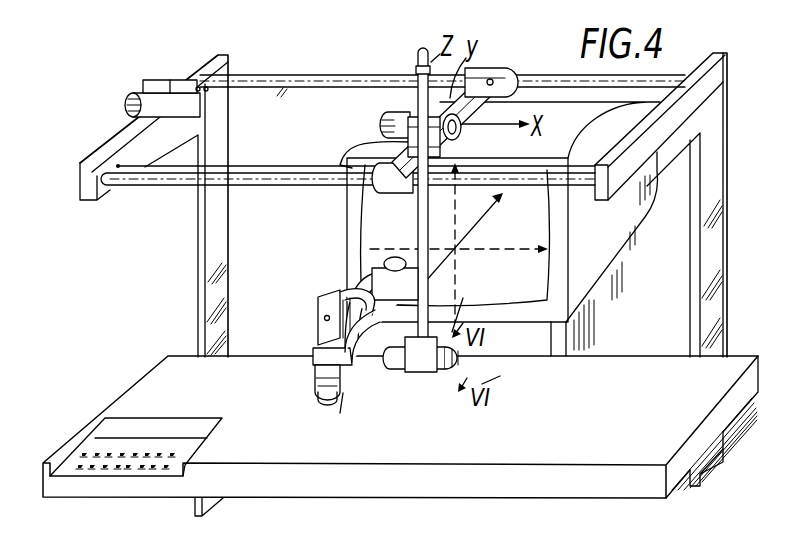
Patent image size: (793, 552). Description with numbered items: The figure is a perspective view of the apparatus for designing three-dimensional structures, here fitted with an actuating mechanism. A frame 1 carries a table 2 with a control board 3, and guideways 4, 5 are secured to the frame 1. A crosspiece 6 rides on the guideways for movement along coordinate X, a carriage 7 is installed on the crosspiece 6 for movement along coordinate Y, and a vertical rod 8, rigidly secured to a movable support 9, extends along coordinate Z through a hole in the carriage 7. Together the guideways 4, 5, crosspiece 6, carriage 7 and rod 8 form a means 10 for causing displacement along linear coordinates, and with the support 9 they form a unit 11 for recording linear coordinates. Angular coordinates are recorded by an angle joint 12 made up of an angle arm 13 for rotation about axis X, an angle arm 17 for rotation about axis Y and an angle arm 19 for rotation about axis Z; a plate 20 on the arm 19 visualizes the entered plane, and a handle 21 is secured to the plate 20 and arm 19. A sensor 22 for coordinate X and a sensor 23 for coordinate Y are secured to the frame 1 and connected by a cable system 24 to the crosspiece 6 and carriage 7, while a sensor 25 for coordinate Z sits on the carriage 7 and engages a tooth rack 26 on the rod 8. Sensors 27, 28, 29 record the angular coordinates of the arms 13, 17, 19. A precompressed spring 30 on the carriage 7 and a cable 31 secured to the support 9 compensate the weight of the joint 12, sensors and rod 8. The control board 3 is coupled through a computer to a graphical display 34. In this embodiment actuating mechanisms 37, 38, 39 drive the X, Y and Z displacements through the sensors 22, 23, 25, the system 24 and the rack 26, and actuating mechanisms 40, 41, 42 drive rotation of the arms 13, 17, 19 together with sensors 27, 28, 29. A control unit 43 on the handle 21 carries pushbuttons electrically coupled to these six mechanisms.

The frame 1 is at (724, 178).
The table 2 is at (152, 367).
The control board 3 is at (90, 451).
The guideway 4 is at (170, 186).
The guideway 5 is at (247, 76).
The crosspiece 6 is at (364, 205).
The carriage 7 is at (395, 116).
The vertical rod 8 is at (418, 217).
The movable support 9 is at (413, 378).
The means for causing displacement along linear coordinates 10 is at (462, 150).
The unit for recording linear coordinates 11 is at (470, 303).
The angle joint 12 is at (348, 362).
The angle arm 13 is at (389, 376).
The angle arm 17 is at (350, 415).
The angle arm 19 is at (318, 362).
The plate 20 is at (319, 320).
The handle 21 is at (350, 293).
The sensor of displacement along linear coordinate X 22 is at (130, 88).
The sensor of displacement along linear coordinate Y 23 is at (152, 80).
The cable system 24 is at (276, 93).
The sensor of displacement along linear coordinate Z 25 is at (380, 125).
The tooth rack 26 is at (418, 70).
The sensor for recording angular coordinate phi 27 is at (503, 371).
The sensor for recording angular coordinate phi-one 28 is at (395, 258).
The sensor for recording angular coordinate phi-two 29 is at (318, 408).
The precompressed spring 30 is at (505, 78).
The cable 31 is at (456, 212).
The graphical display 34 is at (640, 228).
The actuating mechanism for displacement along coordinate X 37 is at (122, 104).
The actuating mechanism for displacement along coordinate Y 38 is at (178, 80).
The actuating mechanism for displacement along coordinate Z 39 is at (350, 150).
The actuating mechanism for rotation in angular coordinate phi 40 is at (437, 382).
The actuating mechanism for rotation in angular coordinate phi-one 41 is at (378, 270).
The actuating mechanism for rotation in angular coordinate phi-two 42 is at (318, 388).
The control unit 43 is at (320, 340).